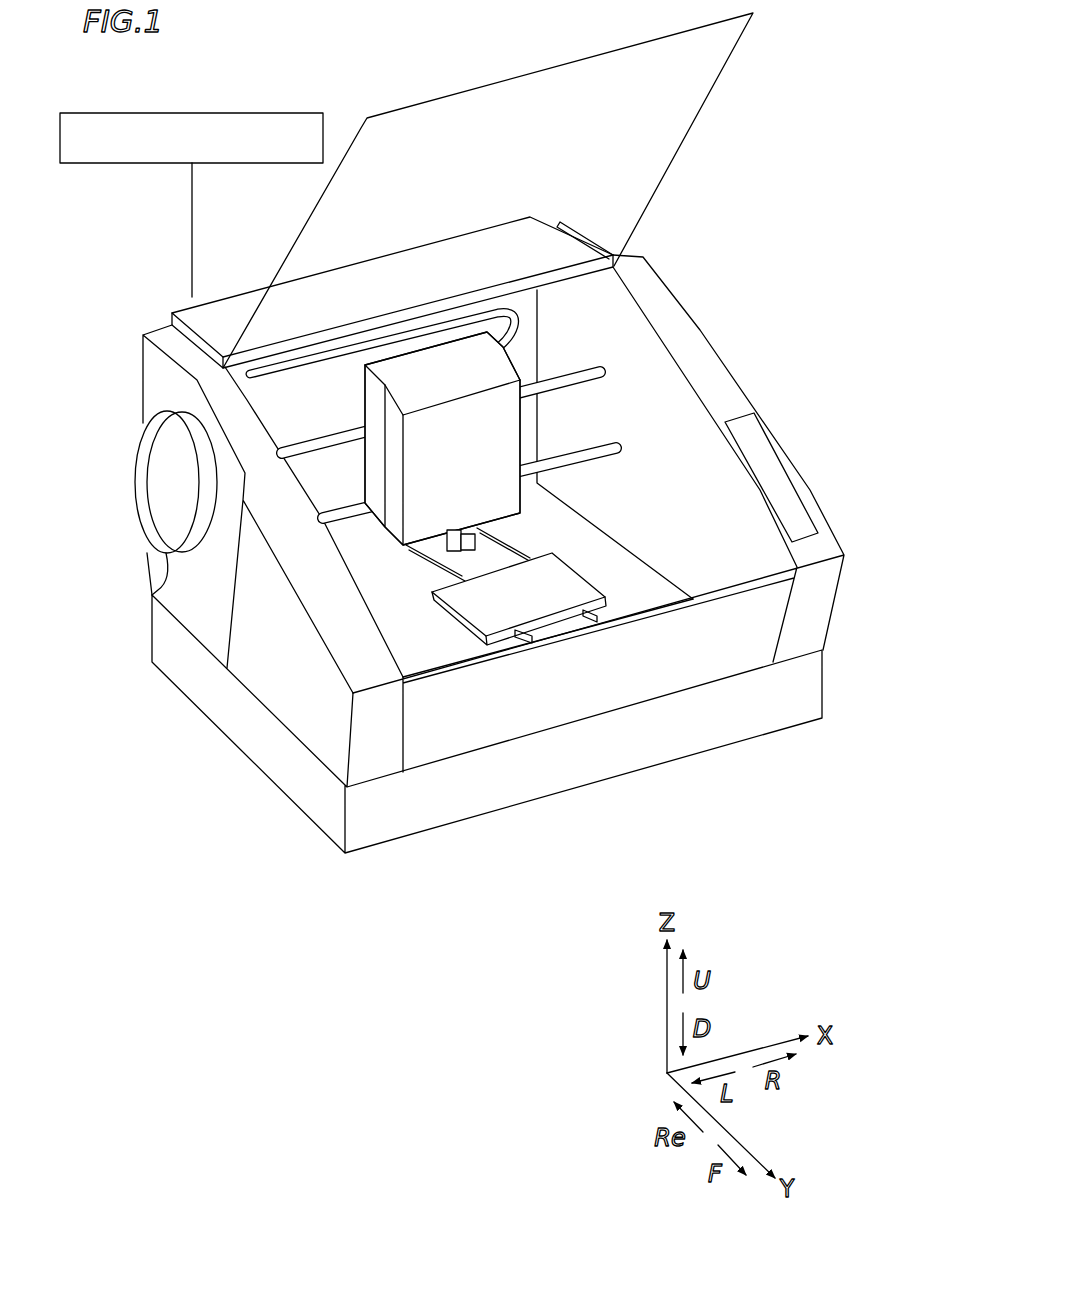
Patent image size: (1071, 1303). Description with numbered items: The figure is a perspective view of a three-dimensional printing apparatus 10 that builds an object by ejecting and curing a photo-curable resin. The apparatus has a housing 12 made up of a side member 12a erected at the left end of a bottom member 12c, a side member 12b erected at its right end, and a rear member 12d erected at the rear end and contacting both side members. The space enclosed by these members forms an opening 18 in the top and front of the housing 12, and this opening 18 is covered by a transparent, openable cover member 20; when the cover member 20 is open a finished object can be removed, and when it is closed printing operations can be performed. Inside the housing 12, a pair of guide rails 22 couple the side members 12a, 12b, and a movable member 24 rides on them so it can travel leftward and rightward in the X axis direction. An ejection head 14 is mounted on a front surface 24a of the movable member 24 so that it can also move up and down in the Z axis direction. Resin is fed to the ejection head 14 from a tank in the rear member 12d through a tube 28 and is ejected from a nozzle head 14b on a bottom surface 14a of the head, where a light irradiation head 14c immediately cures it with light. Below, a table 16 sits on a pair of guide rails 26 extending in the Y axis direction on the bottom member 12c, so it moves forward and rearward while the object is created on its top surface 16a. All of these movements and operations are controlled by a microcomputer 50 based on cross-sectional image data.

The three-dimensional printing apparatus 10 is at (778, 168).
The housing 12 is at (703, 318).
The side member 12a is at (340, 612).
The side member 12b is at (727, 465).
The bottom member 12c is at (440, 648).
The rear member 12d is at (273, 410).
The ejection head 14 is at (398, 532).
The bottom surface 14a is at (447, 545).
The nozzle head 14b is at (565, 535).
The light irradiation head 14c is at (450, 553).
The table 16 is at (500, 638).
The top surface 16a is at (483, 613).
The opening 18 is at (753, 550).
The cover member 20 is at (565, 80).
The guide rails 22 is at (575, 450).
The movable member 24 is at (372, 399).
The front surface 24a is at (400, 443).
The guide rails 26 is at (593, 617).
The tube 28 is at (263, 388).
The microcomputer 50 is at (246, 113).